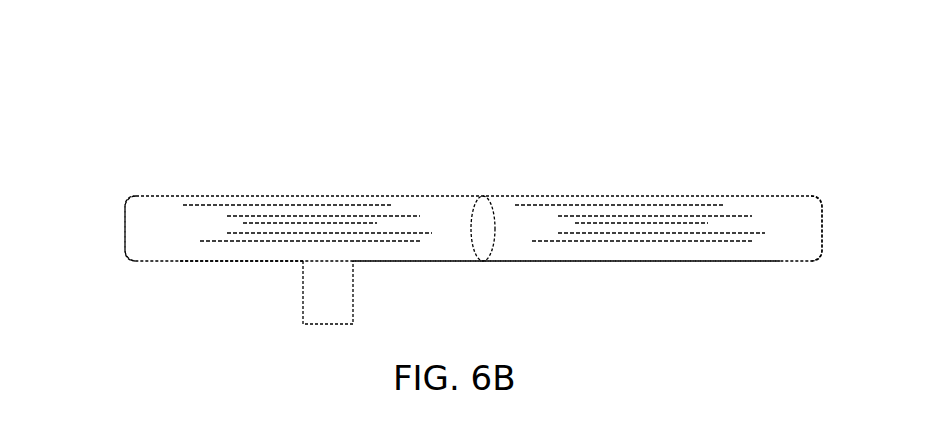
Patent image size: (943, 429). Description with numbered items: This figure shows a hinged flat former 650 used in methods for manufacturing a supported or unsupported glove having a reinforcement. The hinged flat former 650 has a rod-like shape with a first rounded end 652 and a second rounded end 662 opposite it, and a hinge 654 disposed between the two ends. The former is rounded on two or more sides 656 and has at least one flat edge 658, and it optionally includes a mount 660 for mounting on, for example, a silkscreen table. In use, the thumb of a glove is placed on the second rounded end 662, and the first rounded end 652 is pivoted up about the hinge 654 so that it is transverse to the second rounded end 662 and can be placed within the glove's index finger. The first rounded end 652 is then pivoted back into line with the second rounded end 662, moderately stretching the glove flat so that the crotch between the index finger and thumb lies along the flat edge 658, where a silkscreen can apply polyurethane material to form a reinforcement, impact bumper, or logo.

The hinged flat former 650 is at (660, 87).
The first rounded end 652 is at (822, 228).
The hinge 654 is at (483, 197).
The sides 656 is at (210, 250).
The flat edge 658 is at (199, 196).
The mount 660 is at (353, 292).
The second rounded end 662 is at (125, 228).